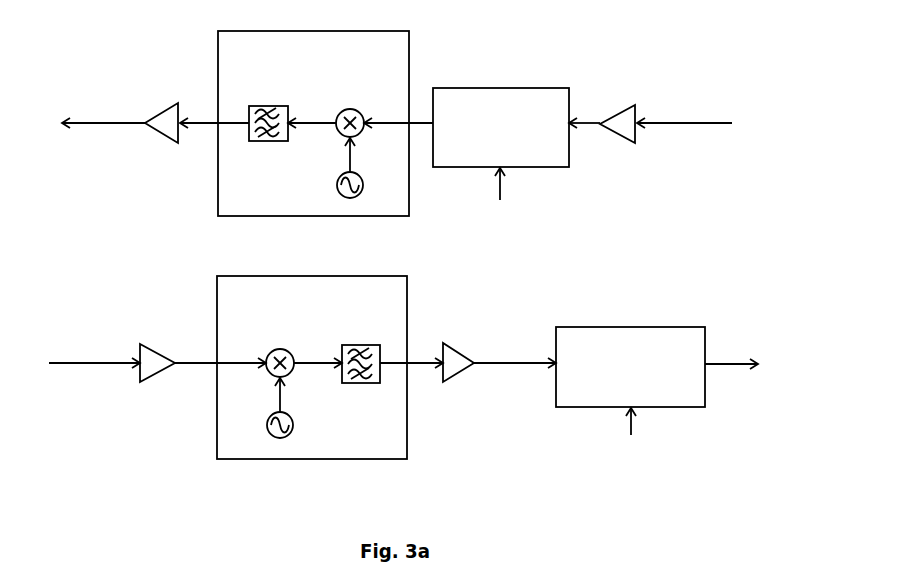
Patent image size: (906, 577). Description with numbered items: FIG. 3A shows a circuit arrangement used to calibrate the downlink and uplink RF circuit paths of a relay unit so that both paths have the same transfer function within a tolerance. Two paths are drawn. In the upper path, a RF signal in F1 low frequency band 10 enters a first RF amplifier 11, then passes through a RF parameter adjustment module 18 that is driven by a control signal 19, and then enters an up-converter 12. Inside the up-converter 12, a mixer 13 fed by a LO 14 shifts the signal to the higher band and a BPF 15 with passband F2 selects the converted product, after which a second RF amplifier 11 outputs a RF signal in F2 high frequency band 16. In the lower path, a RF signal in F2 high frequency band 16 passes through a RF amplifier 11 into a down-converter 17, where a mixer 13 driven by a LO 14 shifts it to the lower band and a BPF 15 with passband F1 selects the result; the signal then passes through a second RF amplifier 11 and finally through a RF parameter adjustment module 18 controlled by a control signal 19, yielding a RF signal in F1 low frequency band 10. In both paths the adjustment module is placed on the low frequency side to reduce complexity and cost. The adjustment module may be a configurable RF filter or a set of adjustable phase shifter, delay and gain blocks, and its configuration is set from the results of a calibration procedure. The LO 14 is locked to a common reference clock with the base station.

The RF signal in F1 low frequency band 10 is at (684, 70).
The RF amplifier 11 is at (172, 175).
The up-converter 12 is at (208, 43).
The mixer 13 is at (366, 139).
The local oscillator 14 is at (366, 195).
The bandpass filter 15 is at (269, 173).
The RF signal in F2 high frequency band 16 is at (108, 65).
The down-converter 17 is at (208, 287).
The RF parameter adjustment module 18 is at (502, 80).
The control signal 19 is at (465, 228).